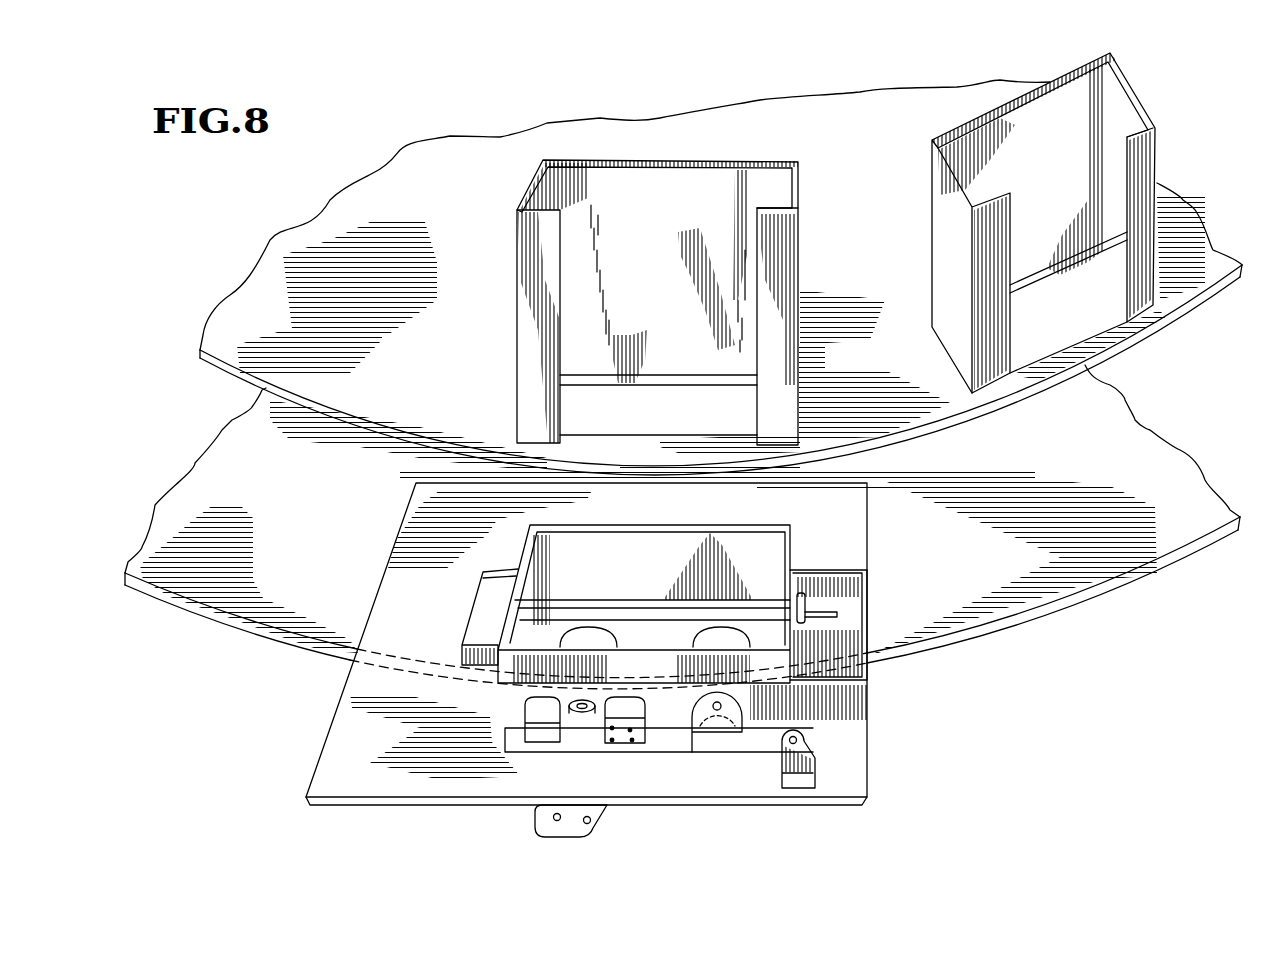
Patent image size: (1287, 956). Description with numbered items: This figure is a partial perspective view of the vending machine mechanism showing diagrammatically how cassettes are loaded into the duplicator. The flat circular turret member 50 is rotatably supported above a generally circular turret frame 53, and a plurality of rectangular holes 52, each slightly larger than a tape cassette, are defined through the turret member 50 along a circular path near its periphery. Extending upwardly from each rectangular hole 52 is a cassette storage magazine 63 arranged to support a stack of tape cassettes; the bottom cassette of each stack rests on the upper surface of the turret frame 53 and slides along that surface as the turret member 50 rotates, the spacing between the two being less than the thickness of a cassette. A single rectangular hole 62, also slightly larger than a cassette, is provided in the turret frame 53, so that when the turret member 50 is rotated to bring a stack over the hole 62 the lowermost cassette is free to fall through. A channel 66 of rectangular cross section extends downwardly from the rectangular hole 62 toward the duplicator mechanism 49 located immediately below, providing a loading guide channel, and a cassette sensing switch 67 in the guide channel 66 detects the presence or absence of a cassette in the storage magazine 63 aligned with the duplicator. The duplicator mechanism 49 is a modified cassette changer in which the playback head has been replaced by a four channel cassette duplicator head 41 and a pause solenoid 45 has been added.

The four channel cassette duplicator head 41 is at (623, 739).
The pause solenoid 45 is at (582, 830).
The duplicator mechanism 49 is at (380, 742).
The turret member 50 is at (249, 313).
The rectangular holes 52 is at (650, 426).
The turret frame 53 is at (207, 485).
The rectangular hole 62 is at (784, 524).
The cassette storage magazine 63 is at (517, 242).
The channel 66 is at (570, 558).
The cassette sensing switch 67 is at (537, 611).